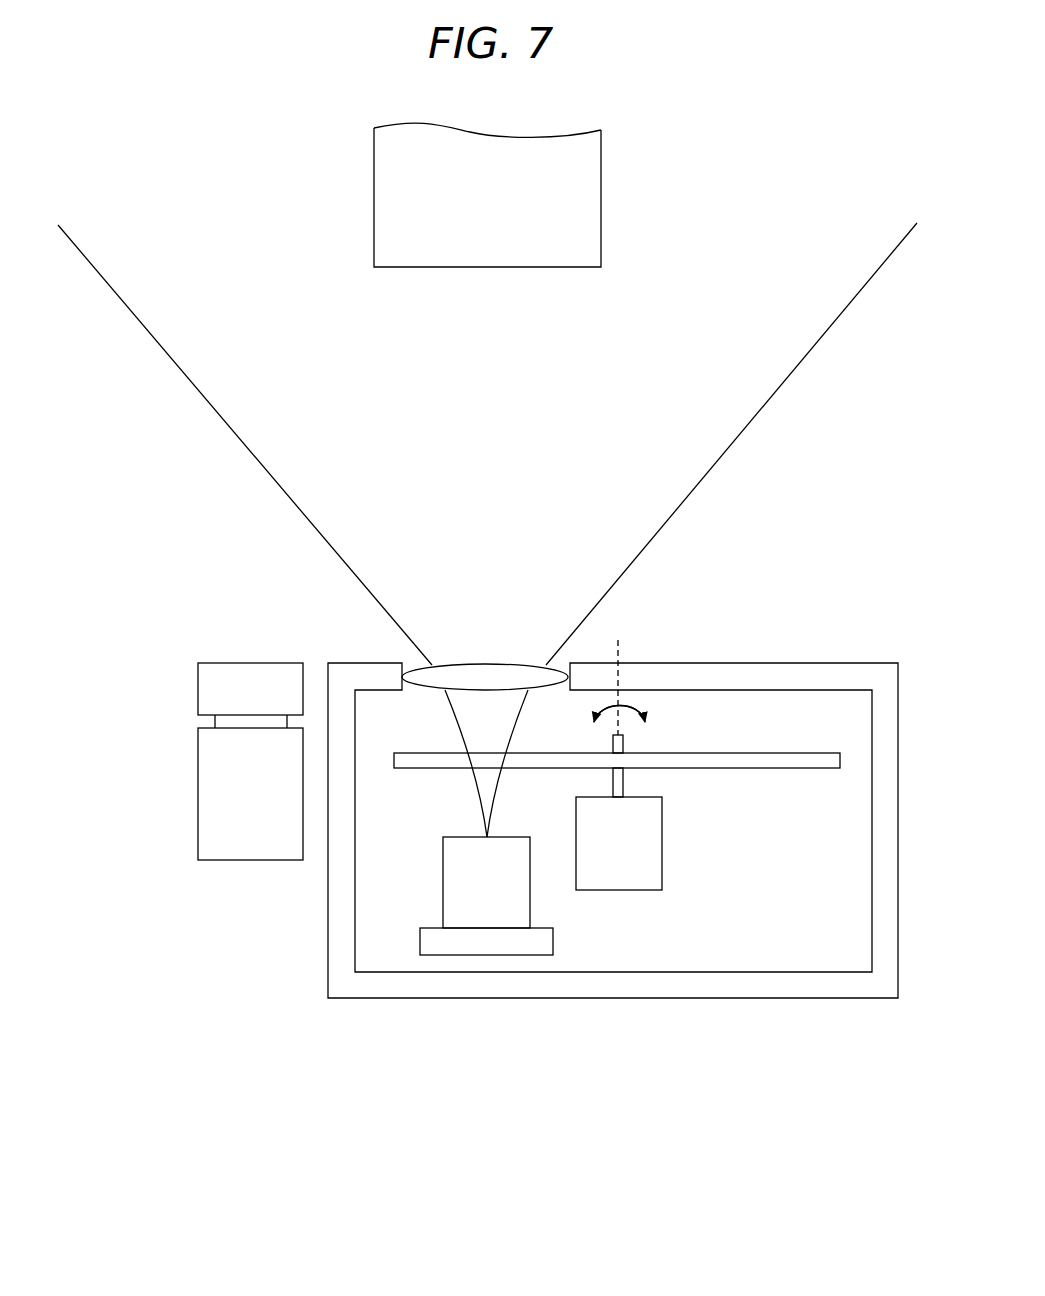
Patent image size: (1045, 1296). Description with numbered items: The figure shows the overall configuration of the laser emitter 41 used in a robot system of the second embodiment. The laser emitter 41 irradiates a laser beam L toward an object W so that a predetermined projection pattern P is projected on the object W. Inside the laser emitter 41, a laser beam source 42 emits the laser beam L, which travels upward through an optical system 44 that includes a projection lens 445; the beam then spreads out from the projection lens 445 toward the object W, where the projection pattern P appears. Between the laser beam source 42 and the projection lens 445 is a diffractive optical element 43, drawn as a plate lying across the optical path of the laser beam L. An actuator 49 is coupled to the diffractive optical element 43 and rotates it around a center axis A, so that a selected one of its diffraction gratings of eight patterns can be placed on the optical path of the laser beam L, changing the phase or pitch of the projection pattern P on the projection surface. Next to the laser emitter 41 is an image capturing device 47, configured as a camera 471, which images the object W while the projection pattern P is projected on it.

The laser emitter 41 is at (685, 1032).
The laser beam source 42 is at (484, 910).
The diffractive optical element 43 is at (790, 753).
The optical system 44 is at (485, 629).
The projection lens 445 is at (485, 678).
The image capturing device 47 is at (200, 799).
The camera 471 is at (248, 850).
The actuator 49 is at (610, 860).
The center axis A is at (619, 671).
The laser beam L is at (782, 385).
The projection pattern P is at (489, 270).
The object W is at (600, 213).